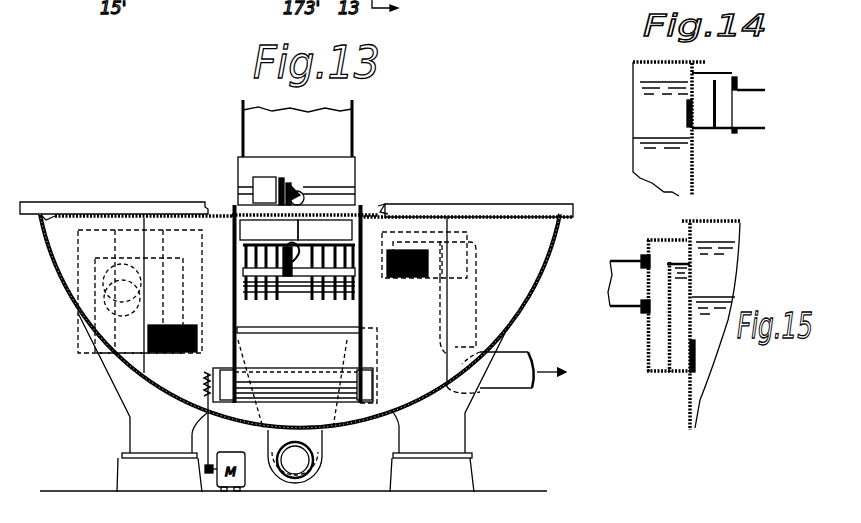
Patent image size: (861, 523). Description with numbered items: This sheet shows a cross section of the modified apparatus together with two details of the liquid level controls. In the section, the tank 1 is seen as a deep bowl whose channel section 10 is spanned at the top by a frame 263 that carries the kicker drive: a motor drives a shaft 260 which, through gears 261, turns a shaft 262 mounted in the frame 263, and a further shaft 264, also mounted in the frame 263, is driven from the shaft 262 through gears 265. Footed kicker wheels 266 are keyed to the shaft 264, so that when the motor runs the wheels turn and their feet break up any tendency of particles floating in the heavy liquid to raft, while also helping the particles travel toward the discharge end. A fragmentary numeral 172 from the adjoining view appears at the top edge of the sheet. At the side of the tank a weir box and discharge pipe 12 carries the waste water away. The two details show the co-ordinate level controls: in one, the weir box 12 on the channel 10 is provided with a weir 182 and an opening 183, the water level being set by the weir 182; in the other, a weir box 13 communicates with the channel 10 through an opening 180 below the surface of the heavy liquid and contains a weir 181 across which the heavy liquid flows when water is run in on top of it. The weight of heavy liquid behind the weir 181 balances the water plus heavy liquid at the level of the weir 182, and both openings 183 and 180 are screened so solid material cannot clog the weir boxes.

In FIG. 14, the tank 1 is at (694, 171).
In FIG. 14, the channel section of the tank 10 is at (647, 62).
In FIG. 15, the channel section of the tank 10 is at (709, 219).
In FIG. 13, the weir box and discharge pipe 12 is at (513, 355).
In FIG. 14, the weir box and discharge pipe 12 is at (738, 76).
In FIG. 13, the weir box and overflow pipe 13 is at (77, 342).
In FIG. 15, the weir box and overflow pipe 13 is at (658, 236).
In FIG. 13, the fragment numeral 172 is at (209, 9).
In FIG. 15, the opening 180 is at (690, 360).
In FIG. 15, the weir 181 is at (667, 334).
In FIG. 14, the weir 182 is at (716, 107).
In FIG. 14, the opening 183 is at (694, 114).
In FIG. 13, the shaft 260 is at (326, 192).
In FIG. 13, the gears 261 is at (290, 185).
In FIG. 13, the shaft 262 is at (304, 230).
In FIG. 13, the frame 263 is at (243, 230).
In FIG. 13, the shaft 264 is at (333, 276).
In FIG. 13, the gears 265 is at (290, 290).
In FIG. 13, the footed kicker wheels 266 is at (279, 295).